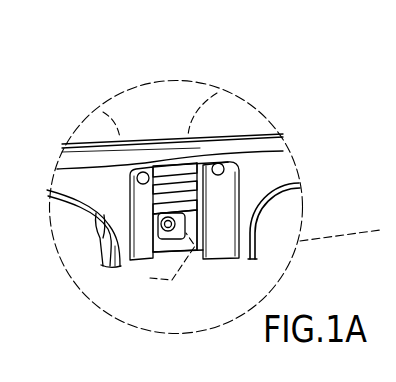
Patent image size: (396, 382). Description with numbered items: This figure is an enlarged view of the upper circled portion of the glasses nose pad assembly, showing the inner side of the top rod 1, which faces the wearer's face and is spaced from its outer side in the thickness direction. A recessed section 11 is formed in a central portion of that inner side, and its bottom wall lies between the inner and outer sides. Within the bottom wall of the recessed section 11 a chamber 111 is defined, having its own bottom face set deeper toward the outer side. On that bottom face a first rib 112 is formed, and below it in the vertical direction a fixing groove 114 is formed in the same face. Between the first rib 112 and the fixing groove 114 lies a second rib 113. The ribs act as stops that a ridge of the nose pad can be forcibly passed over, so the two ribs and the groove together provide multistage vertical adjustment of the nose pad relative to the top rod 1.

The top rod 1 is at (84, 108).
The recessed section 11 is at (150, 278).
The chamber 111 is at (236, 133).
The first rib 112 is at (157, 181).
The second rib 113 is at (189, 183).
The fixing groove 114 is at (162, 252).